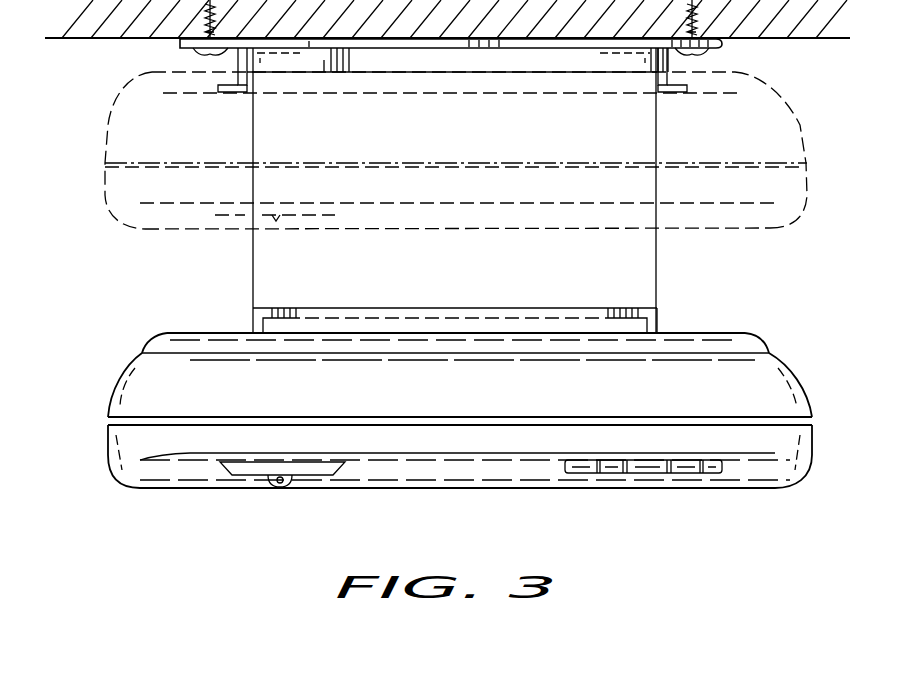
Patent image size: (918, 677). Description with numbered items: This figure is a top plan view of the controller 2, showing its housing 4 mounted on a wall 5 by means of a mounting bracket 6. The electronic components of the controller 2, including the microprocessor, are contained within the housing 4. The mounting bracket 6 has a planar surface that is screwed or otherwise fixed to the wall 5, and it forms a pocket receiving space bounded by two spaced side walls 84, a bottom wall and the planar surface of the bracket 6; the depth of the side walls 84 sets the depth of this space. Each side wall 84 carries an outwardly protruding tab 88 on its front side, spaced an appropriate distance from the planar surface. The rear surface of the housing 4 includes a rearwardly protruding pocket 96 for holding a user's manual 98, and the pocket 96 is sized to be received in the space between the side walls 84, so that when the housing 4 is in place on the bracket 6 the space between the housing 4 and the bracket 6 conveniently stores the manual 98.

The controller 2 is at (248, 504).
The housing 4 is at (750, 377).
The wall 5 is at (105, 38).
The mounting bracket 6 is at (178, 43).
The side walls 84 is at (669, 62).
The tab 88 is at (680, 92).
The pocket 96 is at (663, 321).
The user's manual 98 is at (420, 317).